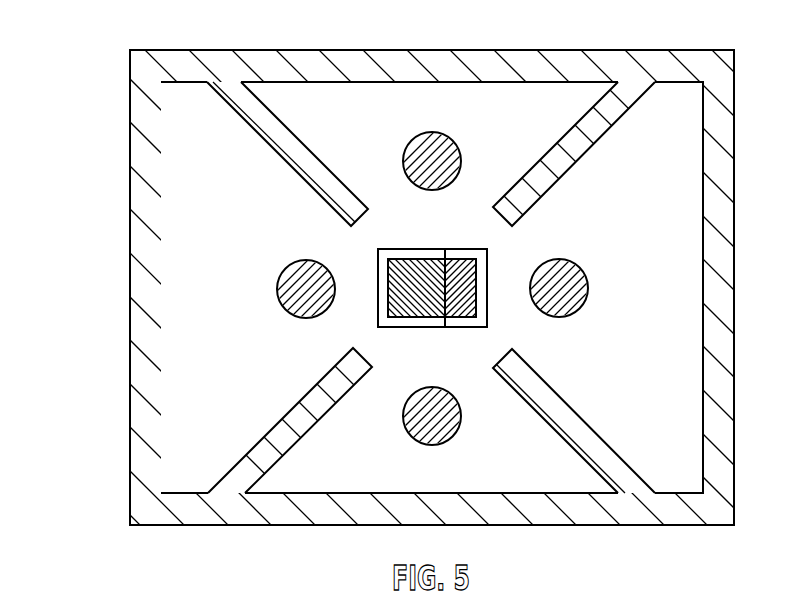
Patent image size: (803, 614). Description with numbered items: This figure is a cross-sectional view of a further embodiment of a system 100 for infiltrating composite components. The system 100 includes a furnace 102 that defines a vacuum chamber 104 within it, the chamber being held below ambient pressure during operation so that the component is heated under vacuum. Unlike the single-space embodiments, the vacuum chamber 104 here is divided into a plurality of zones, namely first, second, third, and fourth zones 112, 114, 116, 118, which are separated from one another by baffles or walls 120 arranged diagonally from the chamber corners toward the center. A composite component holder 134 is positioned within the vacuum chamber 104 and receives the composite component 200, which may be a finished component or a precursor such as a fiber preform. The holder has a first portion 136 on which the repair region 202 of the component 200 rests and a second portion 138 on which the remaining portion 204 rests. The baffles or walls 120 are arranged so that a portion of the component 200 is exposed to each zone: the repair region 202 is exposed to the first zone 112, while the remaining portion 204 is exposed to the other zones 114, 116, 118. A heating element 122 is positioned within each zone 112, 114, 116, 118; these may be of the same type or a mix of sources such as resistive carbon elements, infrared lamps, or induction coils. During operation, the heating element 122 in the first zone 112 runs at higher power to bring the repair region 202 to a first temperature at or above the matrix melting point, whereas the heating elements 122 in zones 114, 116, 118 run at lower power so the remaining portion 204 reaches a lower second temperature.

The system for infiltrating composite components 100 is at (90, 103).
The furnace 102 is at (276, 50).
The vacuum chamber 104 is at (222, 381).
The first zone 112 is at (655, 207).
The second zone 114 is at (362, 129).
The third zone 116 is at (222, 157).
The fourth zone 118 is at (534, 466).
The baffles or walls 120 is at (305, 182).
The heating element 122 is at (461, 152).
The composite component holder 134 is at (388, 350).
The first portion of the composite component holder 136 is at (487, 282).
The second portion of the composite component holder 138 is at (378, 272).
The composite component 200 is at (370, 305).
The repair region 202 is at (458, 262).
The remaining portion 204 is at (406, 318).